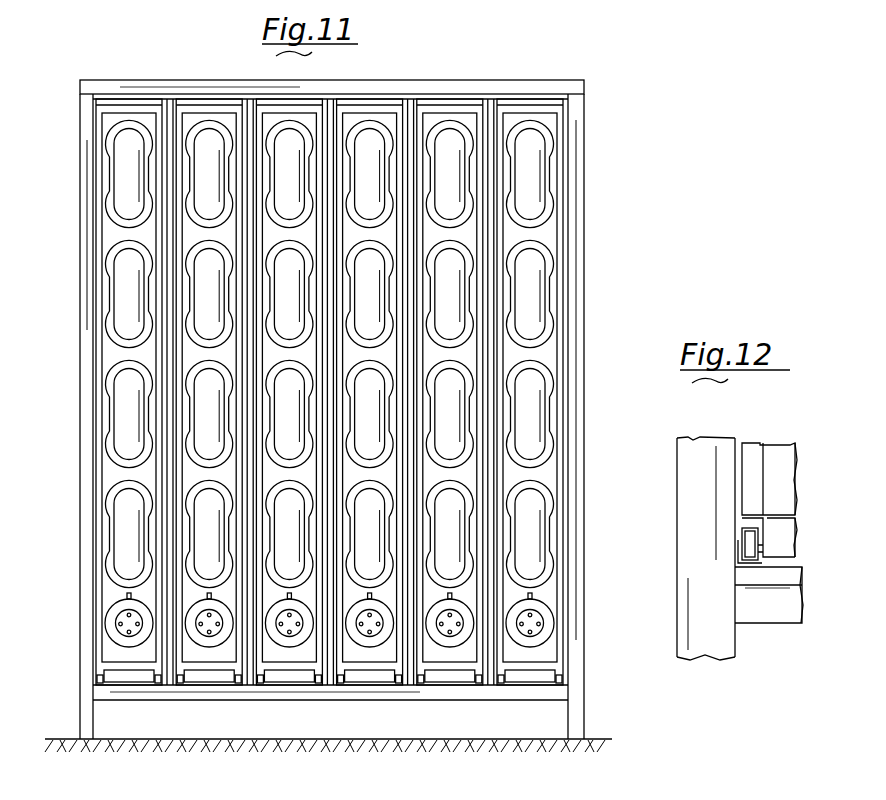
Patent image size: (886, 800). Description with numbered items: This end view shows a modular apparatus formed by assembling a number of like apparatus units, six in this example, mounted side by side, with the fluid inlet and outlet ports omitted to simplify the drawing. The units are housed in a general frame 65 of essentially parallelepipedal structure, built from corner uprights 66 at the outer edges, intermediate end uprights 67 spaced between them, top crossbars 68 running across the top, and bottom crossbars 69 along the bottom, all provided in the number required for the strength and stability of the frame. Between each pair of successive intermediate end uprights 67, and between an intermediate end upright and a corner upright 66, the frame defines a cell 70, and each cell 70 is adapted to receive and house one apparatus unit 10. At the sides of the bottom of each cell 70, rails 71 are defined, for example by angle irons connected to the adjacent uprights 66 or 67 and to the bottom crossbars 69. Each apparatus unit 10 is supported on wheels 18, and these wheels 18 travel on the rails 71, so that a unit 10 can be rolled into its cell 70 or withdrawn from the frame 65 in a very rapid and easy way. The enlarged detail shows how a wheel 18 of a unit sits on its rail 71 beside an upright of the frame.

In FIG. 11, the apparatus unit 10 is at (112, 590).
In FIG. 12, the wheels 18 is at (740, 530).
In FIG. 11, the general frame 65 is at (590, 648).
In FIG. 11, the corner uprights 66 is at (573, 278).
In FIG. 11, the intermediate end uprights 67 is at (490, 200).
In FIG. 11, the top crossbars 68 is at (457, 92).
In FIG. 11, the bottom crossbars 69 is at (347, 693).
In FIG. 11, the cells 70 is at (90, 628).
In FIG. 11, the rails 71 is at (172, 685).